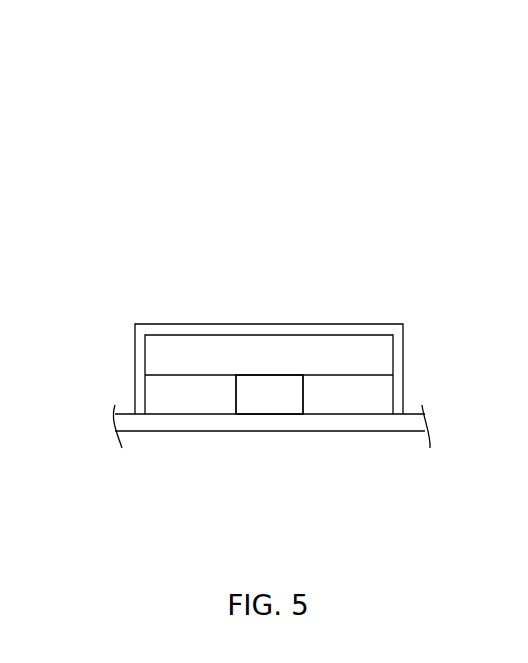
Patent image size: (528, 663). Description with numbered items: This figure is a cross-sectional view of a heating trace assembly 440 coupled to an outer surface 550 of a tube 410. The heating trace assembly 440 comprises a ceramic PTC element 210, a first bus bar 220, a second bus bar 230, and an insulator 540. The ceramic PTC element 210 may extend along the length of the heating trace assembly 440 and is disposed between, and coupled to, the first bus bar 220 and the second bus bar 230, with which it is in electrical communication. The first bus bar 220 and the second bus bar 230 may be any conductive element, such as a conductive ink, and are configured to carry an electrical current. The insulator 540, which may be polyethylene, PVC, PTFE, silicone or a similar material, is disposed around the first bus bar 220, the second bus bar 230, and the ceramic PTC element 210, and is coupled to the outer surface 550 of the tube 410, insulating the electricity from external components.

The heating trace assembly 440 is at (212, 115).
The tube 410 is at (302, 422).
The insulator 540 is at (143, 352).
The ceramic PTC element 210 is at (263, 358).
The first bus bar 220 is at (180, 392).
The second bus bar 230 is at (360, 403).
The outer surface 550 is at (248, 414).